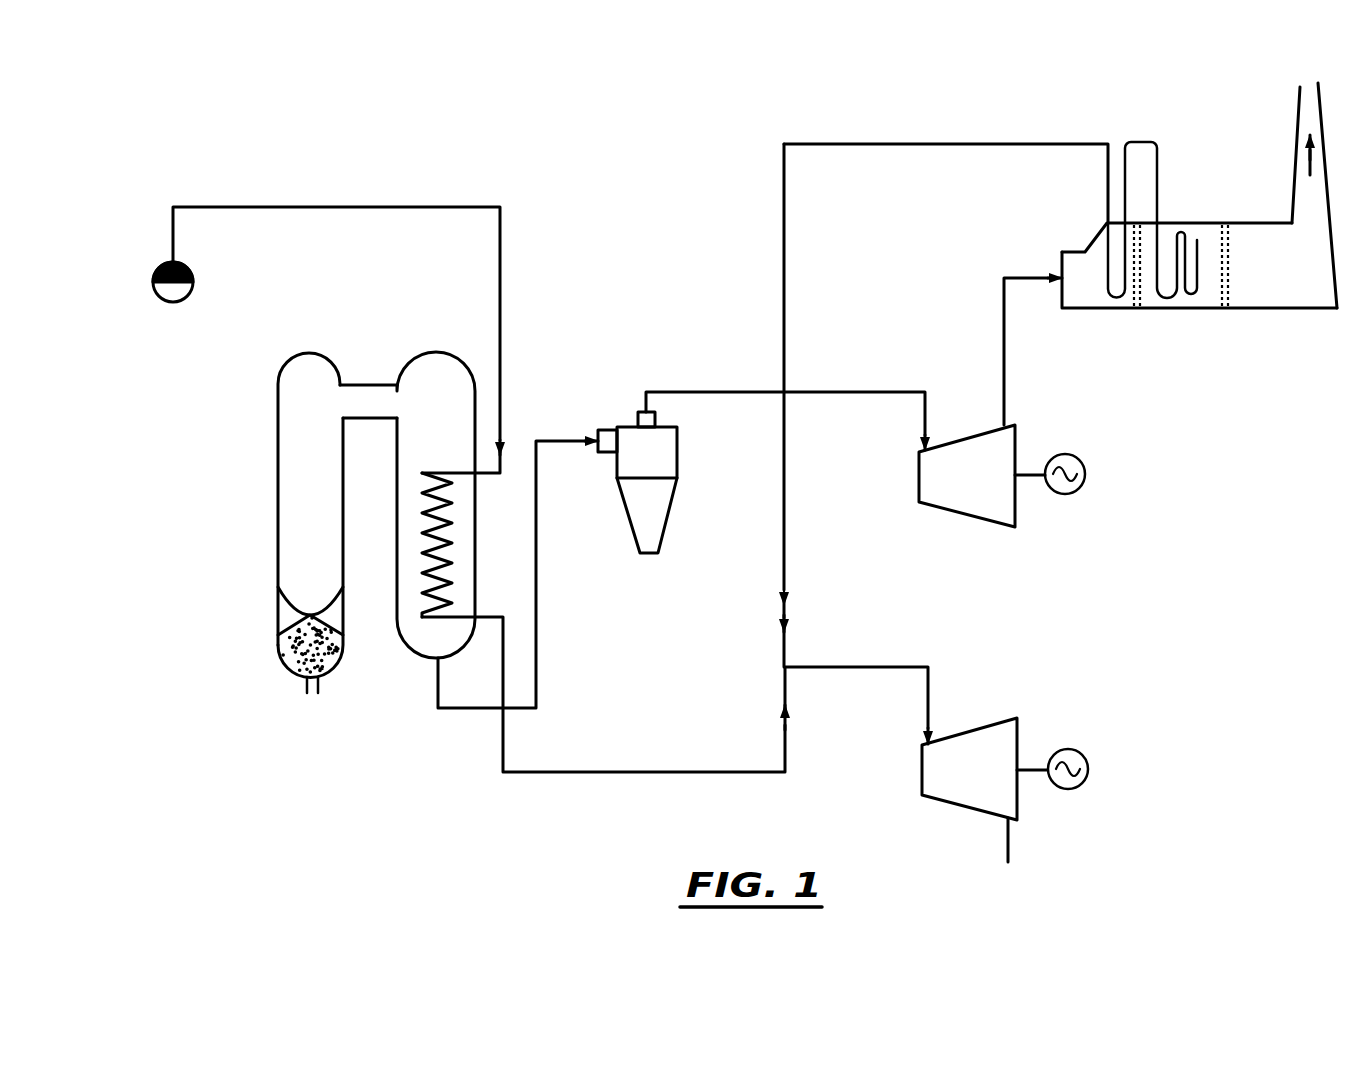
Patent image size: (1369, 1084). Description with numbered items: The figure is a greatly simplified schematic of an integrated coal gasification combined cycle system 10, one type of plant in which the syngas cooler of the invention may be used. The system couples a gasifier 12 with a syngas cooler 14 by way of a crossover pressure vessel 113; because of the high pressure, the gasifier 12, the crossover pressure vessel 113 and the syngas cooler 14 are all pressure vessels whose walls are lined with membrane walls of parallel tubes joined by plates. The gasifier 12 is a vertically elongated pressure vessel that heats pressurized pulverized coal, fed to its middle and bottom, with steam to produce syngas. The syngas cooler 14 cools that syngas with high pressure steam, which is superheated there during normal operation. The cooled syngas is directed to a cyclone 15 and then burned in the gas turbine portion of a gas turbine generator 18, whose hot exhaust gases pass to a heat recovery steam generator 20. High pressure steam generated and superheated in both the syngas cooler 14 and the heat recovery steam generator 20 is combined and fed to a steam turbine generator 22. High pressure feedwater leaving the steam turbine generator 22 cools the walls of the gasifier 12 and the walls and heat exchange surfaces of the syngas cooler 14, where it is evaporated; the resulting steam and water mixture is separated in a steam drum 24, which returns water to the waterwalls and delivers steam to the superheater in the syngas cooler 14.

The integrated coal gasification combined cycle system 10 is at (240, 797).
The gasifier 12 is at (278, 556).
The crossover pressure vessel 113 is at (353, 385).
The syngas cooler 14 is at (432, 352).
The cyclone 15 is at (680, 456).
The gas turbine generator 18 is at (1017, 440).
The heat recovery steam generator 20 is at (1283, 308).
The steam turbine generator 22 is at (1022, 728).
The steam drum 24 is at (190, 268).